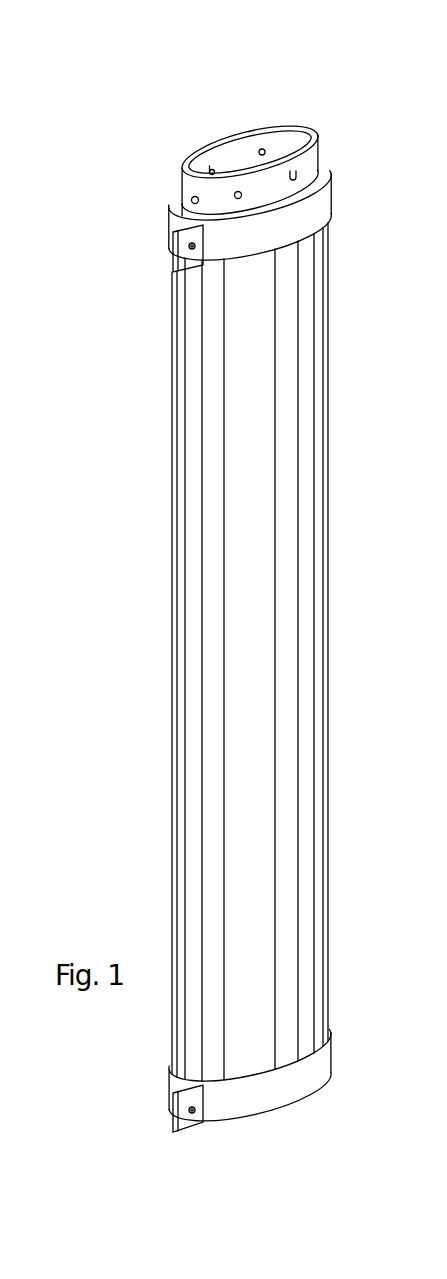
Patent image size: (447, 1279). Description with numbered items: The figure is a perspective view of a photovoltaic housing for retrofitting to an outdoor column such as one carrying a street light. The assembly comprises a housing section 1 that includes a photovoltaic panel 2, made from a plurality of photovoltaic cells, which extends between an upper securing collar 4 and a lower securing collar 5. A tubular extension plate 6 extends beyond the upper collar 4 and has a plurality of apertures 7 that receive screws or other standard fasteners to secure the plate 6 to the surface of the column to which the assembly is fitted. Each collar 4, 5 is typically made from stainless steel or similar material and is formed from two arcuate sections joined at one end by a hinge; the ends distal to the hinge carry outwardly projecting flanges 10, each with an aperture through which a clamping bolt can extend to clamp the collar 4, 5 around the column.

The housing section 1 is at (110, 91).
The photovoltaic panel 2 is at (273, 387).
The upper securing collar 4 is at (293, 218).
The lower securing collar 5 is at (252, 1095).
The tubular extension plate 6 is at (240, 142).
The apertures 7 is at (296, 175).
The outwardly projecting flanges 10 is at (173, 267).